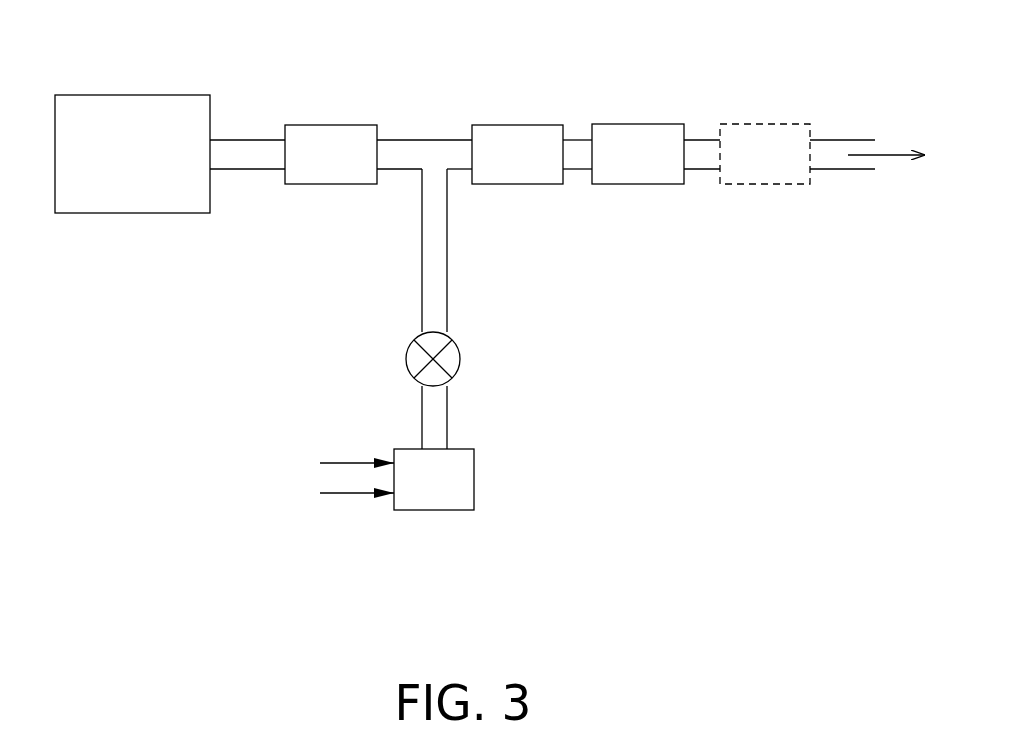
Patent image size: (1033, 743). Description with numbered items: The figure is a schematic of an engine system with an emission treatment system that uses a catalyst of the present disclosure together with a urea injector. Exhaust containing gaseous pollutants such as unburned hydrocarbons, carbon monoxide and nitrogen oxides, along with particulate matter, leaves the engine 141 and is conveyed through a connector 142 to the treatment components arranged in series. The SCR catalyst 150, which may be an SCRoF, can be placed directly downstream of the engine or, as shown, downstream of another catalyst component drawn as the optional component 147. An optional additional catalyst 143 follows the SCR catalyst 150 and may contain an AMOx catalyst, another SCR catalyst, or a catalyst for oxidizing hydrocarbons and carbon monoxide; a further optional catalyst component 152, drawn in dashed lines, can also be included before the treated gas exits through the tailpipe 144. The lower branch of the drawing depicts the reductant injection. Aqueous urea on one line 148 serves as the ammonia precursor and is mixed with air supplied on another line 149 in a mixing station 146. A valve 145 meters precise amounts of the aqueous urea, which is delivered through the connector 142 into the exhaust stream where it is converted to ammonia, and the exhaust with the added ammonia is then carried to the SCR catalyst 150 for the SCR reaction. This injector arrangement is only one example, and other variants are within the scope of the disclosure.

The engine 141 is at (92, 220).
The connector 142 is at (245, 140).
The additional catalyst 143 is at (635, 188).
The tailpipe 144 is at (895, 152).
The valve 145 is at (462, 360).
The mixing station 146 is at (453, 515).
The optional component 147 is at (303, 185).
The line 148 is at (335, 495).
The line 149 is at (330, 462).
The SCR catalyst 150 is at (488, 187).
The optional catalyst component 152 is at (742, 188).